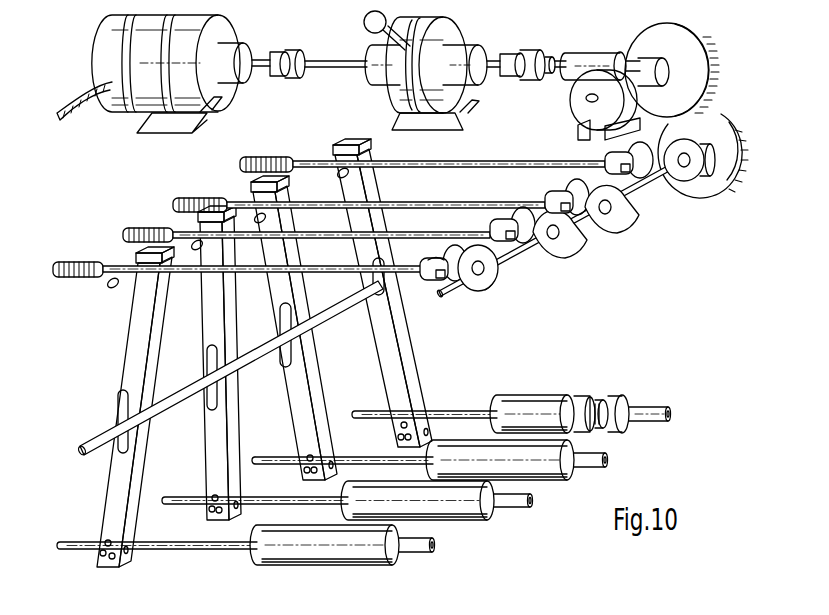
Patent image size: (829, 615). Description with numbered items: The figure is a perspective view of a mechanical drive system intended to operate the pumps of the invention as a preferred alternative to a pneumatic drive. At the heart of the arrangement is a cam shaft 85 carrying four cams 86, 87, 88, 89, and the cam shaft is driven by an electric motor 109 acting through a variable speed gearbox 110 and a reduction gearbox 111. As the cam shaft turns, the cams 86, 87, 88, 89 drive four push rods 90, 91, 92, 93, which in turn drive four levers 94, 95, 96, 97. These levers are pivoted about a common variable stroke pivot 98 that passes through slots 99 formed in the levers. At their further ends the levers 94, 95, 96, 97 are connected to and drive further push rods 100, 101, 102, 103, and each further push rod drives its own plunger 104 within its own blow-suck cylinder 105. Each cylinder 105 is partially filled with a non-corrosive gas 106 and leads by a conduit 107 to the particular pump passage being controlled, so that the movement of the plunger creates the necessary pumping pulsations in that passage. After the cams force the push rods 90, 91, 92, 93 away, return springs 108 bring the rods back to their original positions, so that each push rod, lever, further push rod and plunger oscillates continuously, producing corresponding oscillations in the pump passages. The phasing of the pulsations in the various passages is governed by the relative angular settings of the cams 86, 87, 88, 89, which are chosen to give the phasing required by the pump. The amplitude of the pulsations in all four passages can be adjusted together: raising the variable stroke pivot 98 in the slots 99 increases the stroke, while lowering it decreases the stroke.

The cam shaft 85 is at (460, 279).
The cam 86 is at (497, 273).
The cam 87 is at (567, 241).
The cam 88 is at (626, 218).
The cam 89 is at (686, 183).
The push rod 90 is at (113, 278).
The push rod 91 is at (352, 240).
The push rod 92 is at (505, 202).
The push rod 93 is at (473, 162).
The lever 94 is at (132, 337).
The lever 95 is at (203, 340).
The lever 96 is at (314, 394).
The lever 97 is at (412, 343).
The variable stroke pivot 98 is at (93, 438).
The slots 99 is at (291, 366).
The further push rod 100 is at (168, 549).
The further push rod 101 is at (303, 527).
The further push rod 102 is at (352, 457).
The further push rod 103 is at (452, 412).
The plunger 104 is at (600, 401).
The blow-suck cylinder 105 is at (523, 397).
The non-corrosive gas 106 is at (617, 397).
The conduit 107 is at (650, 423).
The return springs 108 is at (90, 262).
The electric motor 109 is at (240, 38).
The variable speed gearbox 110 is at (458, 37).
The reduction gearbox 111 is at (624, 41).